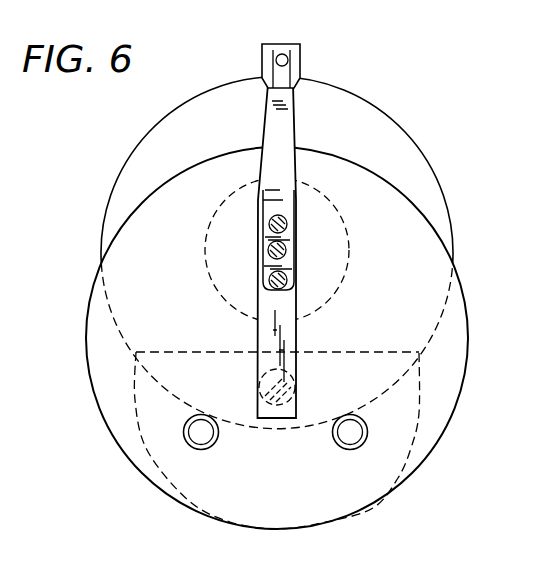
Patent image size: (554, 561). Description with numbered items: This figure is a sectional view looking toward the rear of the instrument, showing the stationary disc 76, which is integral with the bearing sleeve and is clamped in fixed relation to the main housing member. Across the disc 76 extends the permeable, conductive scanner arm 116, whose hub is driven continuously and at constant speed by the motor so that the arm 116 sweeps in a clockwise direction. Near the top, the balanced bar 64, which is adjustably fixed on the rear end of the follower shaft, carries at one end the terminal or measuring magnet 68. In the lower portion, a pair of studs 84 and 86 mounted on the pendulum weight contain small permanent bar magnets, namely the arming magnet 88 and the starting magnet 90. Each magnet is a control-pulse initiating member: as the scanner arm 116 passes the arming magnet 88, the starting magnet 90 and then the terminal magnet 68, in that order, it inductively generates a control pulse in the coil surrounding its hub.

The balanced bar 64 is at (262, 57).
The terminal magnet 68 is at (288, 57).
The scanner arm 116 is at (277, 115).
The disc 76 is at (418, 156).
The stud 84 is at (358, 447).
The stud 86 is at (210, 447).
The arming magnet 88 is at (340, 447).
The starting magnet 90 is at (190, 436).